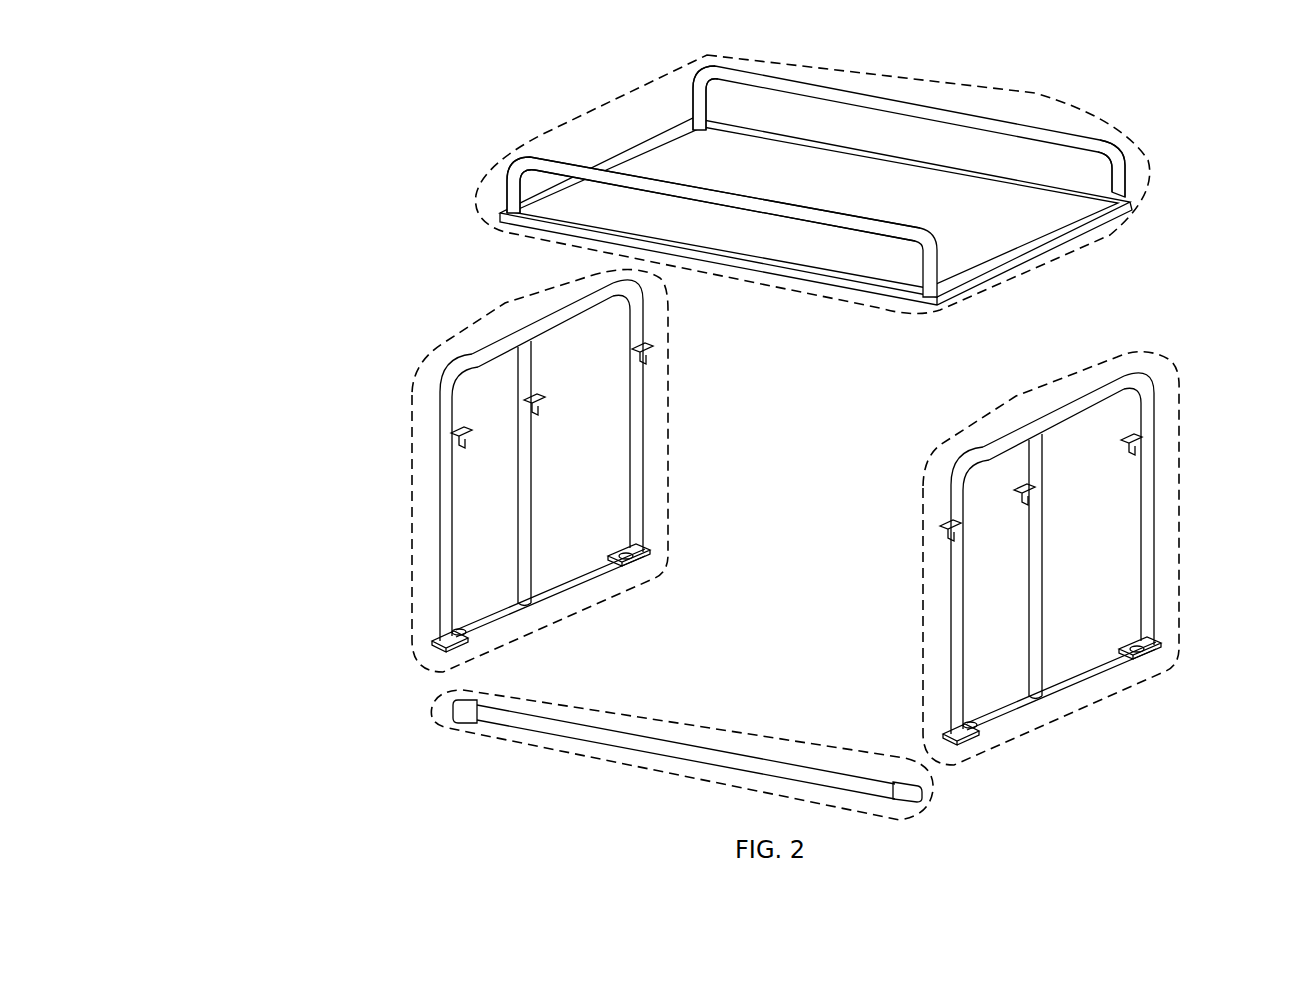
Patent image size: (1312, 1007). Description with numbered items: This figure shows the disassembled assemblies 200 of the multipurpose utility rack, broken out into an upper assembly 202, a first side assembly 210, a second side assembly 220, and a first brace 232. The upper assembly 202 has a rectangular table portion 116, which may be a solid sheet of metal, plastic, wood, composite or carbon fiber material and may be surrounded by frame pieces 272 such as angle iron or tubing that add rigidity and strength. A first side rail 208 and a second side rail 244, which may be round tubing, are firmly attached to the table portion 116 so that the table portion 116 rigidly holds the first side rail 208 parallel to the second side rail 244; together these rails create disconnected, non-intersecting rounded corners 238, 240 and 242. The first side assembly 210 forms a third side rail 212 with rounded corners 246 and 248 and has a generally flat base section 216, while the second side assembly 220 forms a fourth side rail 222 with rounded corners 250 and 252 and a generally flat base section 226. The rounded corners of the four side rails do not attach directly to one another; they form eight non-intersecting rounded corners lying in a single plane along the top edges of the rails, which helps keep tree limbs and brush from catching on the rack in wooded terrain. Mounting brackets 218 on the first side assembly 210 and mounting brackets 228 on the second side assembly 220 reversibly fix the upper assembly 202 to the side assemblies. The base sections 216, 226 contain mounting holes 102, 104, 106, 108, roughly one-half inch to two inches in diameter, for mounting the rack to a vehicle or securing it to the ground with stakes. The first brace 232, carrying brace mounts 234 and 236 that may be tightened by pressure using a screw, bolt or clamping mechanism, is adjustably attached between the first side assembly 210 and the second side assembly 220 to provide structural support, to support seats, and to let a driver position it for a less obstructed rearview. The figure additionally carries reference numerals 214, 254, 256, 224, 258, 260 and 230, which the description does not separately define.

The disassembled assemblies 200 is at (345, 110).
The upper assembly 202 is at (824, 184).
The table portion 116 is at (898, 204).
The frame pieces 272 is at (1058, 238).
The first side rail 208 is at (962, 127).
The rounded corner 238 is at (713, 82).
The rounded corner 240 is at (1107, 150).
The rounded corner 242 is at (512, 168).
The second side rail 244 is at (693, 192).
The first side assembly 210 is at (544, 460).
The third side rail 212 is at (577, 308).
The center post 214 is at (528, 490).
The base section 216 is at (580, 577).
The mounting brackets 218 is at (640, 360).
The rounded corner 246 is at (453, 372).
The rounded corner 248 is at (627, 292).
The left post 254 is at (445, 543).
The right post 256 is at (636, 447).
The mounting hole 102 is at (460, 633).
The mounting hole 104 is at (620, 558).
The second side assembly 220 is at (1056, 554).
The fourth side rail 222 is at (1080, 407).
The center post 224 is at (1043, 583).
The base section 226 is at (1098, 668).
The mounting brackets 228 is at (1133, 445).
The rounded corner 250 is at (968, 465).
The rounded corner 252 is at (1143, 383).
The left post 258 is at (962, 613).
The right post 260 is at (1147, 522).
The mounting hole 106 is at (973, 725).
The mounting hole 108 is at (1135, 655).
The cross bar assembly 230 is at (630, 735).
The first brace 232 is at (665, 747).
The brace mount 234 is at (467, 712).
The brace mount 236 is at (908, 785).